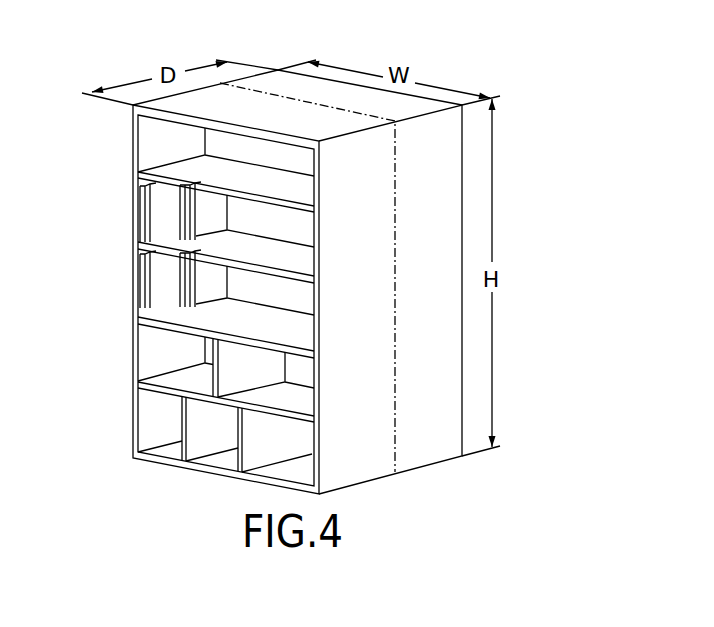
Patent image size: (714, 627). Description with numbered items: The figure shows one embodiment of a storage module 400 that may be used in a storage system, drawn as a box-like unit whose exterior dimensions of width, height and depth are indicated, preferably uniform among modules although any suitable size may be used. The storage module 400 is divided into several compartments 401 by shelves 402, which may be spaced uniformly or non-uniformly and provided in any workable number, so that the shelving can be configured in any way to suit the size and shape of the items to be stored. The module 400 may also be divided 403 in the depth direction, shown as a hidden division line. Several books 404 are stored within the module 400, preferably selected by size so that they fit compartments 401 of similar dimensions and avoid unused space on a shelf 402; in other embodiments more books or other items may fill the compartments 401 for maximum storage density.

The storage module 400 is at (530, 50).
The compartments 401 is at (308, 164).
The shelves 402 is at (134, 182).
The division in the depth direction 403 is at (396, 437).
The books 404 is at (135, 282).